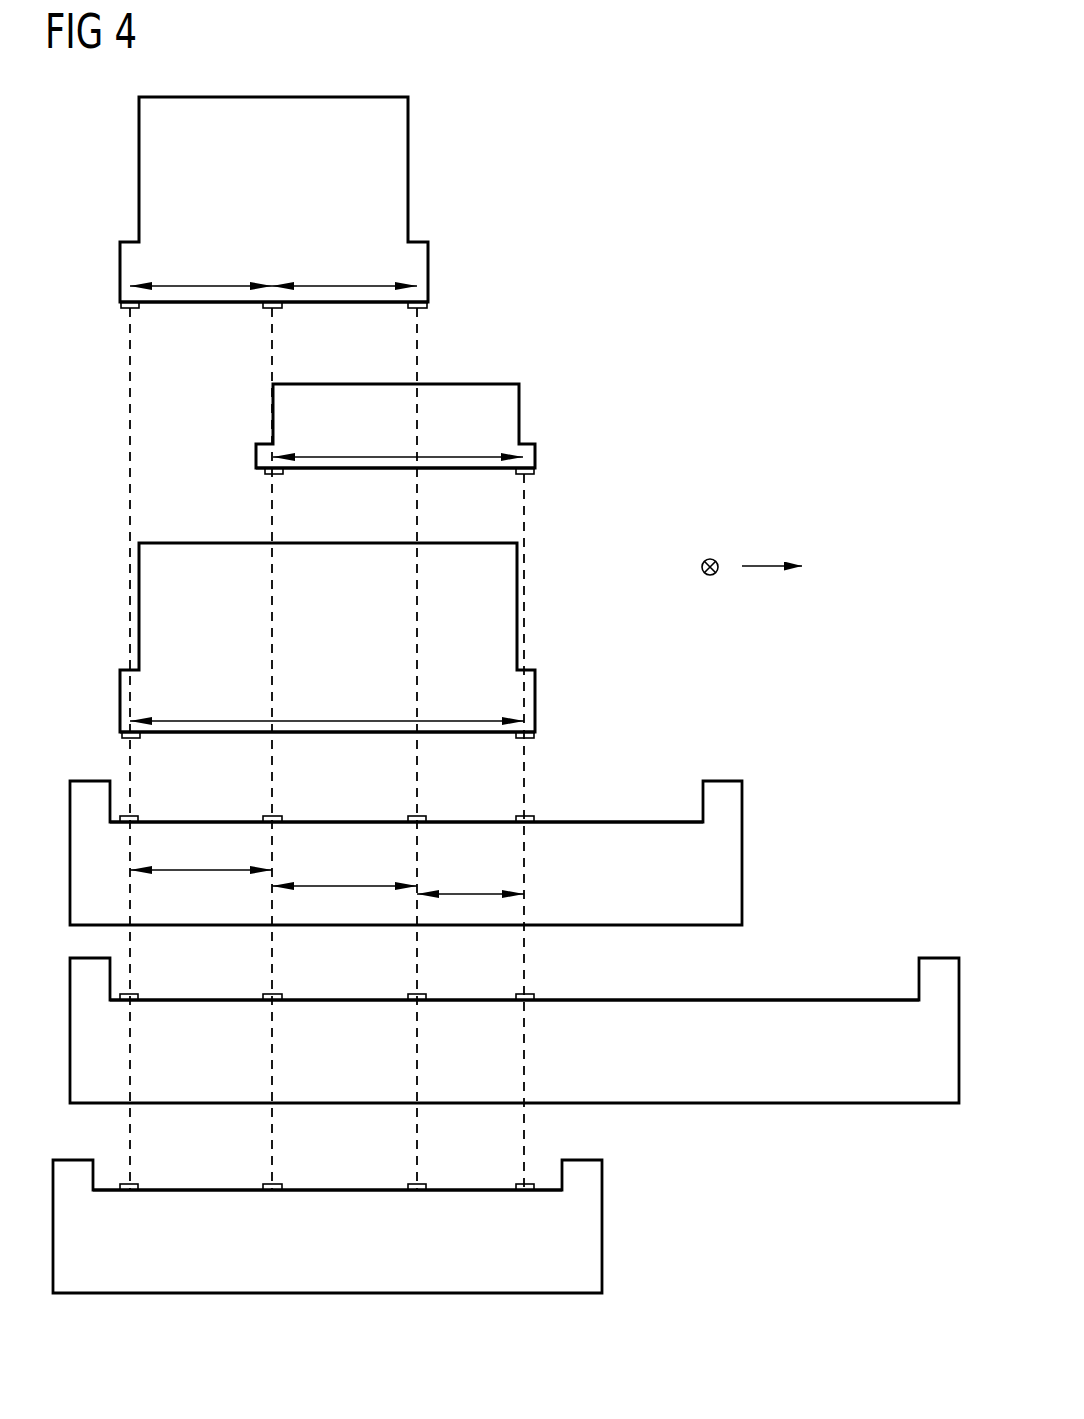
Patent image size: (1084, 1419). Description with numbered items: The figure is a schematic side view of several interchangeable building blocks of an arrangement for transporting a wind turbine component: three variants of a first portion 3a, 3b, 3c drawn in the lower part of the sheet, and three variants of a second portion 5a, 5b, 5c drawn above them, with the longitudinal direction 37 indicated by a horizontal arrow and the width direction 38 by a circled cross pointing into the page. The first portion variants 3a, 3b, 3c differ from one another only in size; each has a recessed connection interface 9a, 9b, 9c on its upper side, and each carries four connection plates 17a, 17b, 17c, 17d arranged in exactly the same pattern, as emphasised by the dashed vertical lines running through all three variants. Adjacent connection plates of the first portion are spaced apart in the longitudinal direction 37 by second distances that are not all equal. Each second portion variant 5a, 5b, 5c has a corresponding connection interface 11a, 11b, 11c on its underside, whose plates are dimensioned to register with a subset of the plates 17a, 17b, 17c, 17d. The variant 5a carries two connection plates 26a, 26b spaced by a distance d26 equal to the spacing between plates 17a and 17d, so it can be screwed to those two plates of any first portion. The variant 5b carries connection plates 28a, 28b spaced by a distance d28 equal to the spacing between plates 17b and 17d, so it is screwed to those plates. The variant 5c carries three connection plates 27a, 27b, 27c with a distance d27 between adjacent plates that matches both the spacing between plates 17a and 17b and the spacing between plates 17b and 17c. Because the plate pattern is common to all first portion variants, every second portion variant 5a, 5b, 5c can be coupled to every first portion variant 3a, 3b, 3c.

The first portion variant 3a is at (614, 1230).
The first portion variant 3b is at (907, 1112).
The first portion variant 3c is at (759, 840).
The second portion variant 5a is at (599, 652).
The second portion variant 5b is at (592, 425).
The second portion variant 5c is at (452, 176).
The connection interface 9a is at (541, 1182).
The connection interface 9b is at (544, 995).
The connection interface 9c is at (544, 817).
The connection interface 11a is at (544, 735).
The connection interface 11b is at (545, 472).
The connection interface 11c is at (432, 306).
The connection plate 17a is at (142, 816).
The connection plate 17b is at (284, 818).
The connection plate 17c is at (408, 817).
The connection plate 17d is at (516, 818).
The connection plate 26a is at (117, 738).
The connection plate 26b is at (513, 738).
The connection plate 27a is at (117, 307).
The connection plate 27b is at (261, 307).
The connection plate 27c is at (405, 307).
The connection plate 28a is at (263, 473).
The connection plate 28b is at (516, 473).
The longitudinal direction 37 is at (765, 565).
The width direction 38 is at (711, 558).
The distance d26 is at (331, 718).
The distance d27 is at (200, 284).
The distance d28 is at (388, 455).